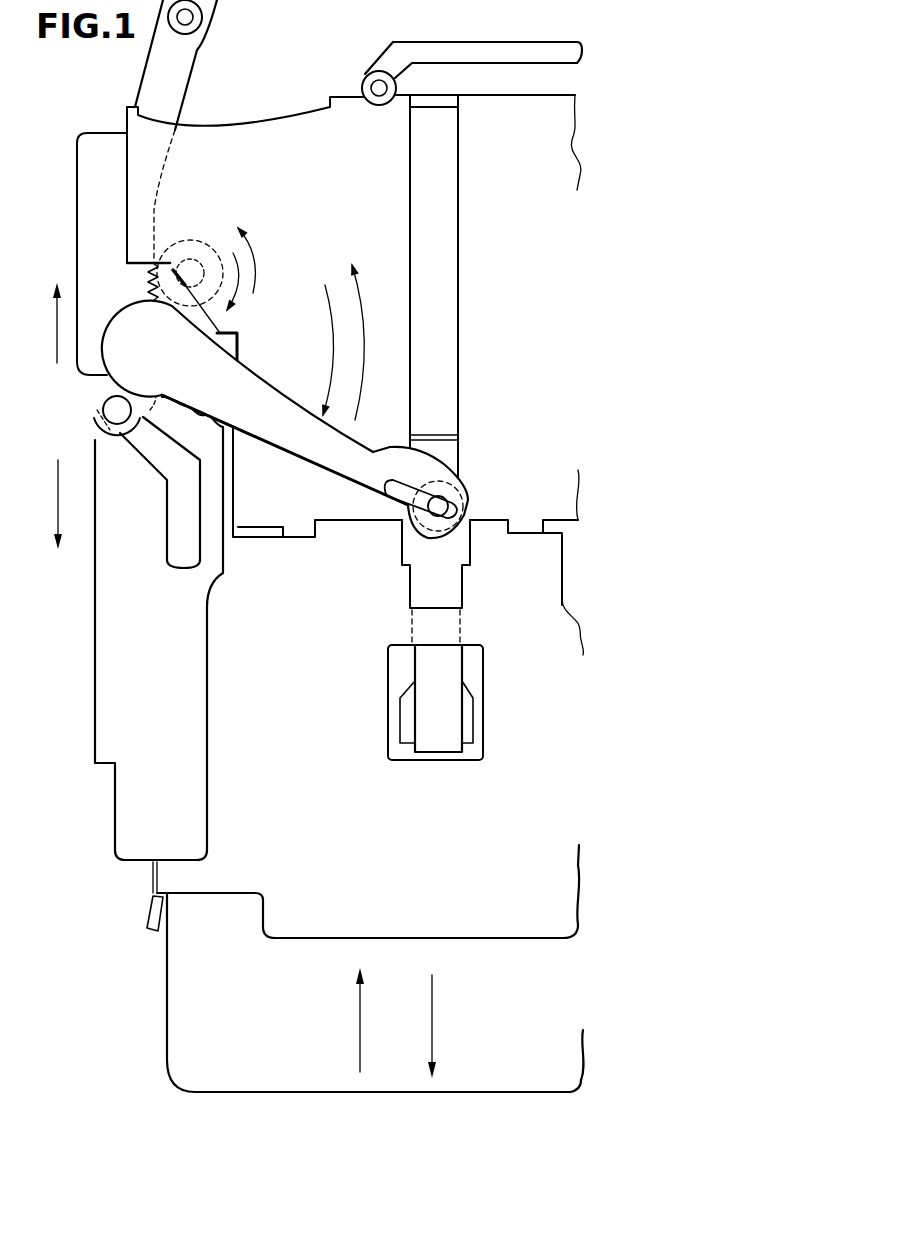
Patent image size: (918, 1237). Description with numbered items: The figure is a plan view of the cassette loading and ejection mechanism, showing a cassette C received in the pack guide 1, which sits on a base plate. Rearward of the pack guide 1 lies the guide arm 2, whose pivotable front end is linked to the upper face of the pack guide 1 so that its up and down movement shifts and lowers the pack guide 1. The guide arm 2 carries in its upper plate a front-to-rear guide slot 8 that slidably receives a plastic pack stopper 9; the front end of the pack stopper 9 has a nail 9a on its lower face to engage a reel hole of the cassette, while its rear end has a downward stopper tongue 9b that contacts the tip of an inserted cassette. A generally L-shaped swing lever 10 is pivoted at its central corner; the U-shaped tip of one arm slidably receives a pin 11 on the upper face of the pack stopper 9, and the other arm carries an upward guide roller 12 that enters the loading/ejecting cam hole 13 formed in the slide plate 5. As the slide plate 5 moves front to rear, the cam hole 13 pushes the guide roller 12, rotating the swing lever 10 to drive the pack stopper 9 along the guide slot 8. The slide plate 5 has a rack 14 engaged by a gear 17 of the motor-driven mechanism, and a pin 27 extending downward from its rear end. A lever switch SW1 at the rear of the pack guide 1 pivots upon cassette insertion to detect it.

The pin 27 is at (203, 15).
The lever switch SW1 is at (498, 42).
The guide arm 2 is at (583, 170).
The slide plate 5 is at (77, 203).
The gear 17 is at (198, 240).
The rack 14 is at (148, 284).
The guide slot 8 is at (459, 352).
The stopper tongue 9b is at (462, 438).
The guide roller 12 is at (101, 410).
The loading/ejecting cam hole 13 is at (149, 463).
The swing lever 10 is at (315, 458).
The pin 11 is at (460, 518).
The pack stopper 9 is at (450, 592).
The nail 9a is at (467, 718).
The pack guide 1 is at (237, 893).
The cassette C is at (167, 982).